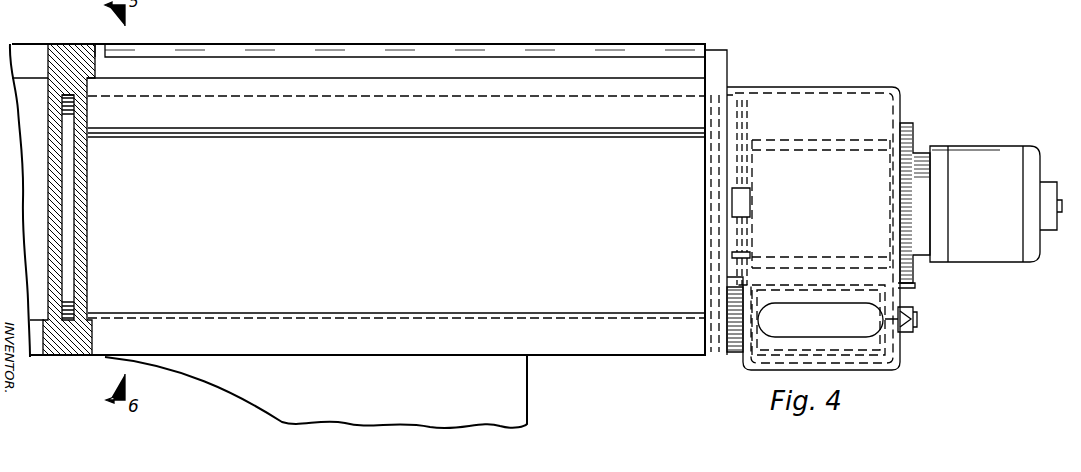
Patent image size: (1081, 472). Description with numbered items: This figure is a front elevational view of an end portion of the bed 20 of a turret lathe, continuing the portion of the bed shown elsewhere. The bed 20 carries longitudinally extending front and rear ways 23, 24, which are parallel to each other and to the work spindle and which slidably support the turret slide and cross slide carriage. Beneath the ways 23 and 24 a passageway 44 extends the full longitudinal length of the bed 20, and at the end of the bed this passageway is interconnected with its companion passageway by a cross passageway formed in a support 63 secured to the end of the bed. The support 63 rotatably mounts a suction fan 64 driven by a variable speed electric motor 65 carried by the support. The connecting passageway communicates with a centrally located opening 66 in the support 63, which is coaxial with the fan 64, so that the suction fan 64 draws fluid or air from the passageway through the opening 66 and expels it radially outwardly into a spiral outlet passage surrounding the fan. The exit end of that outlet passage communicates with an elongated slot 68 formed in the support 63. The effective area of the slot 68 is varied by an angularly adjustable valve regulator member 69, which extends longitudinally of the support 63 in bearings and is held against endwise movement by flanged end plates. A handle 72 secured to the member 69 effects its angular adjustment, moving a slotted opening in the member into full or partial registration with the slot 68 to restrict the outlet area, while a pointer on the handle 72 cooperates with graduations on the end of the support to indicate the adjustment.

The bed 20 is at (627, 357).
The front way 23 is at (447, 50).
The rear way 24 is at (27, 50).
The passageway 44 is at (70, 218).
The support 63 is at (864, 88).
The suction fan 64 is at (886, 126).
The variable speed electric motor 65 is at (987, 147).
The centrally located opening 66 is at (735, 178).
The slot 68 is at (804, 333).
The valve regulator member 69 is at (902, 285).
The handle 72 is at (905, 332).